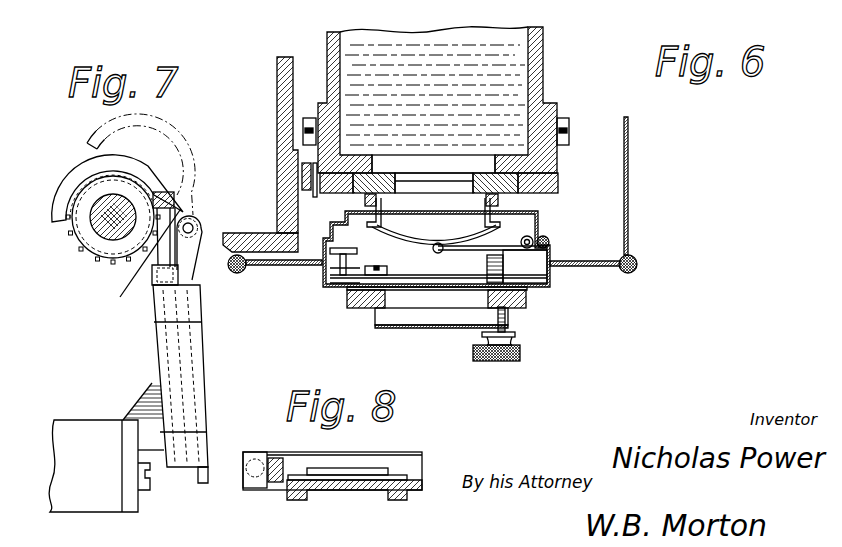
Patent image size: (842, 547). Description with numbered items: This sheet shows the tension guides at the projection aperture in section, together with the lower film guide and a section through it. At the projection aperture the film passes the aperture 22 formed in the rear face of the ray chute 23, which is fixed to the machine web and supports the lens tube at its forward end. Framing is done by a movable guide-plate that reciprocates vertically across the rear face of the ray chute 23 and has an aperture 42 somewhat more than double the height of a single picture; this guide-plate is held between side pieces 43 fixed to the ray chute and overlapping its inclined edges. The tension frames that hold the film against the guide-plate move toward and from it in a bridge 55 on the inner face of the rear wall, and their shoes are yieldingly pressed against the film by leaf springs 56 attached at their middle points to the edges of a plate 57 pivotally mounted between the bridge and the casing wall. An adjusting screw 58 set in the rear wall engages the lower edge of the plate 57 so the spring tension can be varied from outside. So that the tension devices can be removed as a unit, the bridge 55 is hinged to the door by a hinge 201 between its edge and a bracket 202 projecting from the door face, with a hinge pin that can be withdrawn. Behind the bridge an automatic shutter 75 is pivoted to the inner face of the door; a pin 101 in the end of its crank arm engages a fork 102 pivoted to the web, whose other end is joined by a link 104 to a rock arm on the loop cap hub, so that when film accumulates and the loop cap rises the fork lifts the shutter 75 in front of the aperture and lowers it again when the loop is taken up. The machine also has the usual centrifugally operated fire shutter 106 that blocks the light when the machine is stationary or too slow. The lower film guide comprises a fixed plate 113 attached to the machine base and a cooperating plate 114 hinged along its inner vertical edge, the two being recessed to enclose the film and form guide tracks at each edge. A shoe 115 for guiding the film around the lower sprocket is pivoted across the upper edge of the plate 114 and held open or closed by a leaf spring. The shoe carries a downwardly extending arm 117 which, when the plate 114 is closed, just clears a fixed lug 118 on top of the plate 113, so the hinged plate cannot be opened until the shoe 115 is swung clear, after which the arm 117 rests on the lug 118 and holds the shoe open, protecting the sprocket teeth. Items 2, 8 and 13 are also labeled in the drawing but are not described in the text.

In FIG. 7, the base block 2 is at (87, 432).
In FIG. 6, the pivot 8 is at (226, 265).
In FIG. 7, the pivot 8 is at (152, 268).
In FIG. 7, the roller 13 is at (72, 222).
In FIG. 6, the aperture 22 is at (470, 162).
In FIG. 6, the ray chute 23 is at (540, 62).
In FIG. 6, the aperture 42 is at (405, 180).
In FIG. 6, the side pieces 43 is at (305, 184).
In FIG. 6, the bridge 55 is at (540, 222).
In FIG. 6, the leaf springs 56 is at (455, 233).
In FIG. 6, the plate 57 is at (517, 266).
In FIG. 6, the adjusting screw 58 is at (520, 352).
In FIG. 6, the automatic shutter 75 is at (452, 280).
In FIG. 6, the pin 101 is at (357, 262).
In FIG. 6, the fork 102 is at (297, 227).
In FIG. 6, the link 104 is at (303, 165).
In FIG. 6, the fire shutter 106 is at (393, 320).
In FIG. 8, the fixed plate 113 is at (390, 456).
In FIG. 8, the cooperating plate 114 is at (347, 490).
In FIG. 7, the shoe 115 is at (72, 177).
In FIG. 7, the arm 117 is at (139, 254).
In FIG. 8, the arm 117 is at (283, 478).
In FIG. 7, the fixed lug 118 is at (190, 311).
In FIG. 8, the fixed lug 118 is at (255, 485).
In FIG. 6, the hinge 201 is at (557, 243).
In FIG. 6, the bracket 202 is at (557, 282).